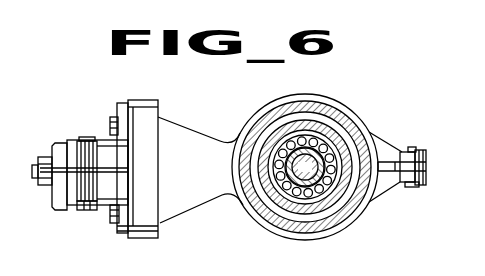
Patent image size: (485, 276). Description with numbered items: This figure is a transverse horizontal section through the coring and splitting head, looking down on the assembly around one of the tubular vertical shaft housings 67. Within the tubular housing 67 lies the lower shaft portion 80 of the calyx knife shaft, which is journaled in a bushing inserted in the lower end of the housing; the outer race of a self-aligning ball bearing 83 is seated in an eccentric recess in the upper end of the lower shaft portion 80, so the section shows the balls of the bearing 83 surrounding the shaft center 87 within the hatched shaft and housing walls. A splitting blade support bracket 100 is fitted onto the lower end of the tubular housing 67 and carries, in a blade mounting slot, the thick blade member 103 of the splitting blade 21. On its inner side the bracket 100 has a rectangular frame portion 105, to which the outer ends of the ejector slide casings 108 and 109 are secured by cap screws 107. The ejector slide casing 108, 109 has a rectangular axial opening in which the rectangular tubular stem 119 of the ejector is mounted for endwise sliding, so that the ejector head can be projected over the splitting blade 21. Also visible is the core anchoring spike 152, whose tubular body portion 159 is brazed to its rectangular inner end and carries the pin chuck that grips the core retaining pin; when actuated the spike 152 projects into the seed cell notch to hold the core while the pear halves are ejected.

The splitting blade support bracket 100 is at (166, 121).
The rectangular frame portion 105 is at (137, 99).
The cap screws 107 is at (112, 122).
The ejector slide casing 108 is at (67, 138).
The ejector slide casing 109 is at (63, 201).
The rectangular tubular stem 119 is at (56, 145).
The core anchoring spikes 152 is at (44, 168).
The tubular body portion 159 is at (37, 176).
The tubular vertical shaft housing 67 is at (333, 204).
The lower shaft portion 80 is at (325, 212).
The self-aligning ball bearing 83 is at (309, 196).
The shaft 87 is at (305, 167).
The splitting blade 21 is at (413, 162).
The blade member 103 is at (420, 169).